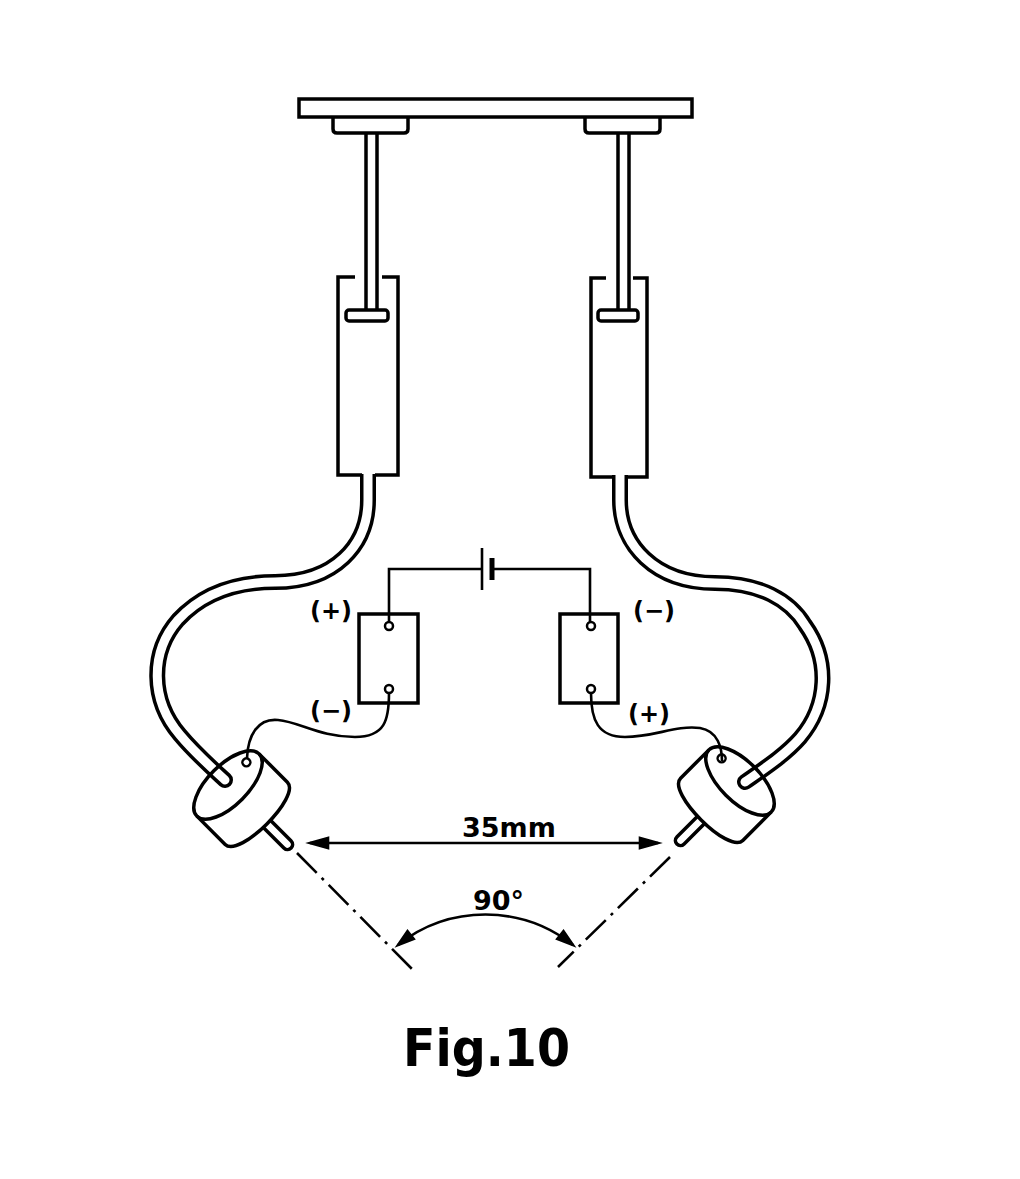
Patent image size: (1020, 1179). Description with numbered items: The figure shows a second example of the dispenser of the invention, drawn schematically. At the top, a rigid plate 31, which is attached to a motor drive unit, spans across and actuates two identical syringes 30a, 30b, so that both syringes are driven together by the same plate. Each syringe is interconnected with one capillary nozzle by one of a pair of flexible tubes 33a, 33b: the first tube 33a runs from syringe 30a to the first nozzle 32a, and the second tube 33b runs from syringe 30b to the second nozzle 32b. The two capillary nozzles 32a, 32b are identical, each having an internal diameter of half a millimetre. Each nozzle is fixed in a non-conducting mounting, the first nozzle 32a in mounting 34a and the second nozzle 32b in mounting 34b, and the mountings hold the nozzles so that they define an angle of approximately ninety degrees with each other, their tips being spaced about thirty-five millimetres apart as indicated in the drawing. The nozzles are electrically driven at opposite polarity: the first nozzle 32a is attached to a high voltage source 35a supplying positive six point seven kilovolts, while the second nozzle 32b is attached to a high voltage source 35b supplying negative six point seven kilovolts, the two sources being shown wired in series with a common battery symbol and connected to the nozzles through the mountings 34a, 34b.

The rigid plate 31 is at (530, 105).
The syringe 30a is at (338, 387).
The syringe 30b is at (647, 388).
The flexible tube 33a is at (173, 608).
The flexible tube 33b is at (792, 610).
The non-conducting mounting 34a is at (220, 825).
The non-conducting mounting 34b is at (740, 833).
The capillary nozzle 32a is at (277, 835).
The capillary nozzle 32b is at (690, 840).
The high voltage source 35a is at (405, 623).
The high voltage source 35b is at (567, 623).